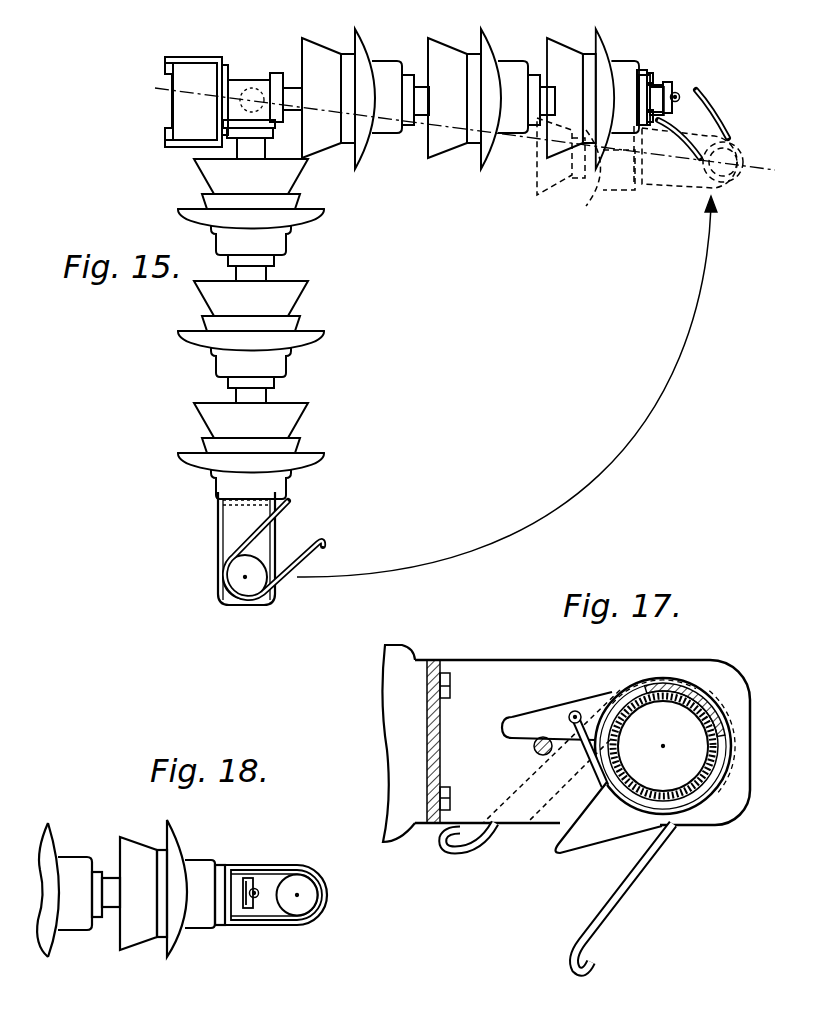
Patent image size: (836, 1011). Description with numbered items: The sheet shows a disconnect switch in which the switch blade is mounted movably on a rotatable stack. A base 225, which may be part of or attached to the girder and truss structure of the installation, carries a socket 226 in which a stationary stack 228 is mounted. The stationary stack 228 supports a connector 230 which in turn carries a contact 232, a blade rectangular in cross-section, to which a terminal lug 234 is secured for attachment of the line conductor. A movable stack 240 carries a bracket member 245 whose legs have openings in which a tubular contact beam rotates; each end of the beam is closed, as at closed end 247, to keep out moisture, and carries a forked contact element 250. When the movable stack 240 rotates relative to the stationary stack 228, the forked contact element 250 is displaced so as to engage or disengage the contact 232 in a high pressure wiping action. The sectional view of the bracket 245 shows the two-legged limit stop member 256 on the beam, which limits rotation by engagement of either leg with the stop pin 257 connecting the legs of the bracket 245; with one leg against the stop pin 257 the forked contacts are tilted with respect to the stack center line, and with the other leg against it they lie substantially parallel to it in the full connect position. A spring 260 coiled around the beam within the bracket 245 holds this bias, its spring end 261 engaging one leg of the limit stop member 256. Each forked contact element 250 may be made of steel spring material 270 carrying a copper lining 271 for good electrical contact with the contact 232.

In FIG. 15, the base 225 is at (185, 70).
In FIG. 15, the socket 226 is at (248, 82).
In FIG. 15, the stationary stack 228 is at (437, 158).
In FIG. 18, the stationary stack 228 is at (139, 945).
In FIG. 15, the connector 230 is at (641, 70).
In FIG. 15, the contact 232 is at (670, 84).
In FIG. 18, the contact 232 is at (252, 908).
In FIG. 15, the terminal lug 234 is at (679, 96).
In FIG. 18, the terminal lug 234 is at (258, 897).
In FIG. 15, the movable stack 240 is at (548, 197).
In FIG. 17, the movable stack 240 is at (408, 657).
In FIG. 18, the movable stack 240 is at (72, 852).
In FIG. 15, the bracket member 245 is at (658, 178).
In FIG. 17, the bracket member 245 is at (483, 672).
In FIG. 18, the bracket member 245 is at (227, 864).
In FIG. 15, the closed end 247 is at (245, 596).
In FIG. 18, the closed end 247 is at (319, 907).
In FIG. 15, the forked contact element 250 is at (730, 128).
In FIG. 18, the forked contact element 250 is at (277, 872).
In FIG. 17, the limit stop member 256 is at (600, 690).
In FIG. 17, the stop pin 257 is at (537, 746).
In FIG. 17, the spring 260 is at (728, 752).
In FIG. 17, the spring end 261 is at (573, 713).
In FIG. 17, the steel spring material 270 is at (638, 870).
In FIG. 17, the copper lining 271 is at (485, 847).